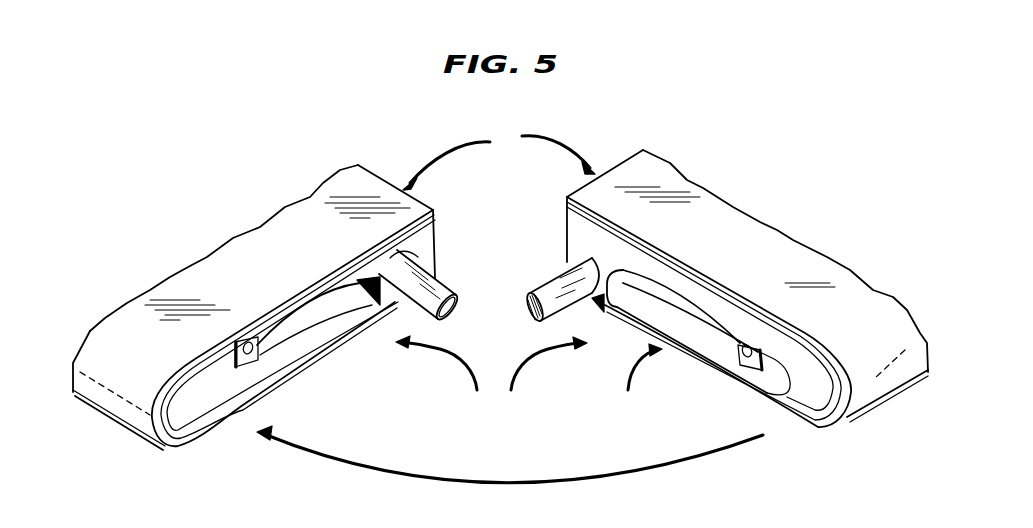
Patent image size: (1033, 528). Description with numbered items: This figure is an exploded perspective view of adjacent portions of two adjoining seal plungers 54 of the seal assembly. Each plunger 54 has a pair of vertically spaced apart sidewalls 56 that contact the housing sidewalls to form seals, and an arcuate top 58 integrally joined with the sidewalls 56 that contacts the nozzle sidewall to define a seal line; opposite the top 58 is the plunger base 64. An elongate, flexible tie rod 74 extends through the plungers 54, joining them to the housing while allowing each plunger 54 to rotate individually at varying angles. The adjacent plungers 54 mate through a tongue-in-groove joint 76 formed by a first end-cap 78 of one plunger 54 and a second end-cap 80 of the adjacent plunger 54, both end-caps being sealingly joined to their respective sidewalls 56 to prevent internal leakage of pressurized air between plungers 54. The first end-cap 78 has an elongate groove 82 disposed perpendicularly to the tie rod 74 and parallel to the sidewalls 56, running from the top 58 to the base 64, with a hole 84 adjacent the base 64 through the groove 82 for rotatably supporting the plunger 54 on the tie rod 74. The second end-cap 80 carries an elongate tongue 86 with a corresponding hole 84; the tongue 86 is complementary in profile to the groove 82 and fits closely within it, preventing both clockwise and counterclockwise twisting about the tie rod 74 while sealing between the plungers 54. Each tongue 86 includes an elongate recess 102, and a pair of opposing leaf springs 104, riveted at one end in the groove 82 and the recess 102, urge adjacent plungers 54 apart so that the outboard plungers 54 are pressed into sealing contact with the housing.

The seal plunger 54 is at (499, 155).
The plunger sidewall 56 is at (242, 265).
The plunger top 58 is at (123, 412).
The plunger base 64 is at (380, 167).
The tie rod 74 is at (522, 318).
The tongue-in-groove joint 76 is at (491, 376).
The first end-cap 78 is at (427, 237).
The second end-cap 80 is at (510, 413).
The groove 82 is at (203, 414).
The hole 84 is at (380, 303).
The tongue 86 is at (830, 423).
The recess 102 is at (718, 379).
The leaf spring 104 is at (333, 303).